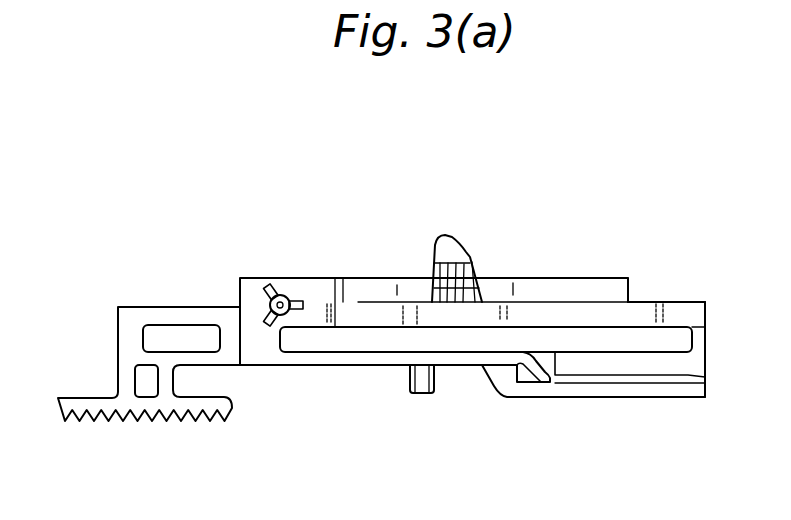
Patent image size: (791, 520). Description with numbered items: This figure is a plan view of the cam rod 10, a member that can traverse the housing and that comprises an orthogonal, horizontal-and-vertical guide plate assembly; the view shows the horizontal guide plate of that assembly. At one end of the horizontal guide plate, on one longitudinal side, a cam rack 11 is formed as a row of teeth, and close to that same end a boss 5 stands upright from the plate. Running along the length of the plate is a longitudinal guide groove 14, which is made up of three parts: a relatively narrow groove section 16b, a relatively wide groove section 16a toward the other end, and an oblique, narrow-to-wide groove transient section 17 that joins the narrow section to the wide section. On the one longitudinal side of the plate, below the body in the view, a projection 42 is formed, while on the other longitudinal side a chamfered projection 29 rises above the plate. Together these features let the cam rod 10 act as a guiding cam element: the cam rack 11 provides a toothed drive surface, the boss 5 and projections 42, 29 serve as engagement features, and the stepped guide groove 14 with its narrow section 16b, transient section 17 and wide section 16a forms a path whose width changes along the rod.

The cam rod 10 is at (571, 271).
The cam rack 11 is at (110, 405).
The boss 5 is at (287, 294).
The relatively narrow groove section 16b is at (383, 347).
The relatively wide groove section 16a is at (665, 375).
The chamfered projection 29 is at (462, 234).
The longitudinal guide groove 14 is at (567, 337).
The oblique, narrow-to-wide groove transient section 17 is at (513, 380).
The projection 42 is at (417, 394).